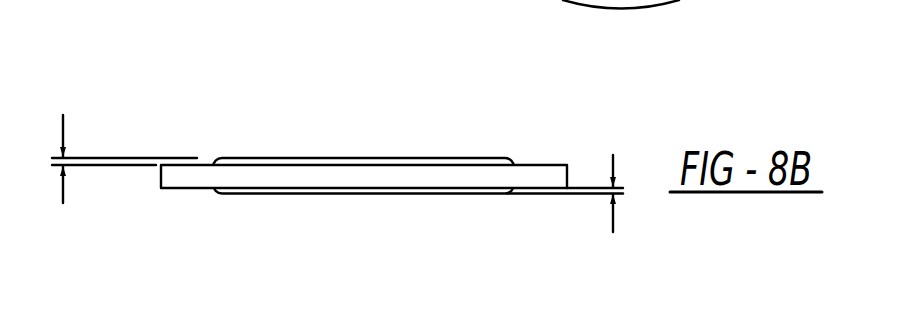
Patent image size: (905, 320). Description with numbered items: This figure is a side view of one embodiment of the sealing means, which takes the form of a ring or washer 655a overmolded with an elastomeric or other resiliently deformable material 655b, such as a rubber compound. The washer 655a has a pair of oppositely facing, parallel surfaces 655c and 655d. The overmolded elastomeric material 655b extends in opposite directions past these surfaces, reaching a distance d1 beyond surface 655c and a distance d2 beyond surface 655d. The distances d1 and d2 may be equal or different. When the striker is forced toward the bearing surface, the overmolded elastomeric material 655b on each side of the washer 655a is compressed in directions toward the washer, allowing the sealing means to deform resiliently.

The washer 655a is at (523, 164).
The overmolded elastomeric material 655b is at (307, 158).
The surface 655c is at (205, 163).
The surface 655d is at (195, 190).
The distance d1 is at (61, 144).
The distance d2 is at (612, 209).